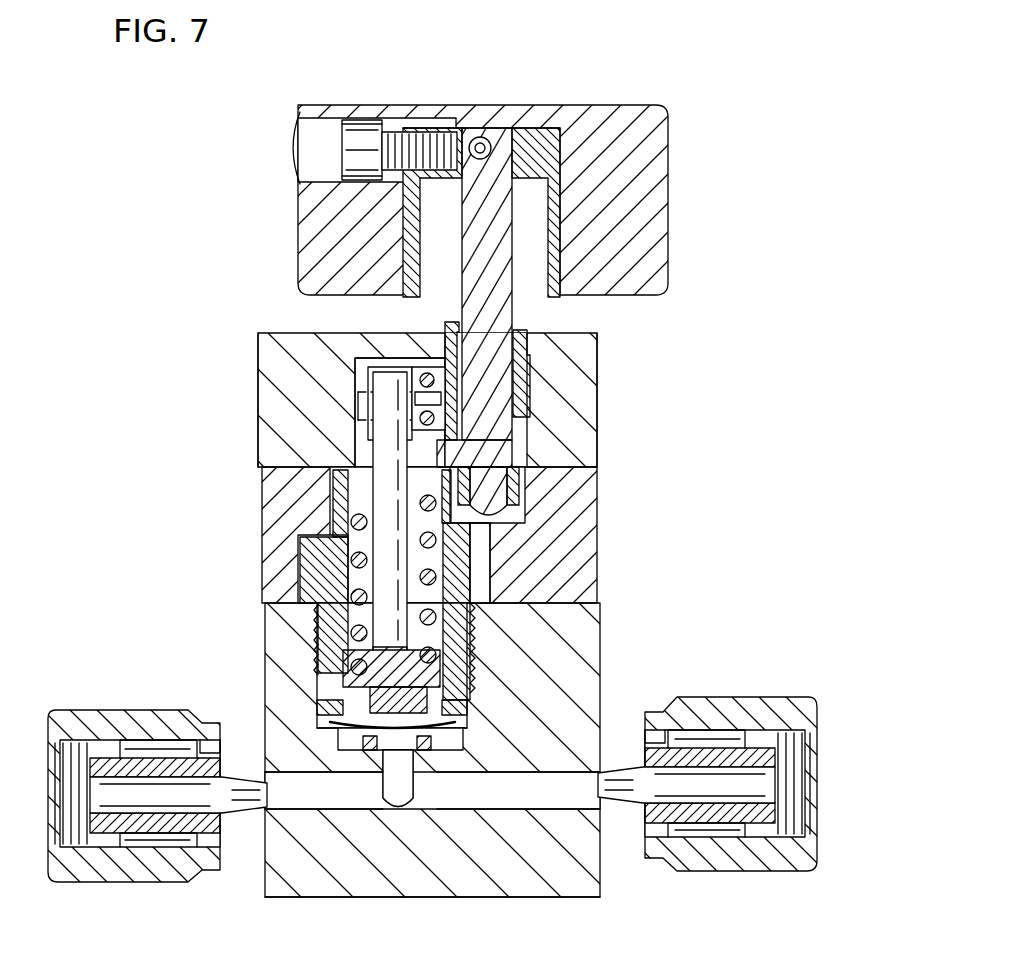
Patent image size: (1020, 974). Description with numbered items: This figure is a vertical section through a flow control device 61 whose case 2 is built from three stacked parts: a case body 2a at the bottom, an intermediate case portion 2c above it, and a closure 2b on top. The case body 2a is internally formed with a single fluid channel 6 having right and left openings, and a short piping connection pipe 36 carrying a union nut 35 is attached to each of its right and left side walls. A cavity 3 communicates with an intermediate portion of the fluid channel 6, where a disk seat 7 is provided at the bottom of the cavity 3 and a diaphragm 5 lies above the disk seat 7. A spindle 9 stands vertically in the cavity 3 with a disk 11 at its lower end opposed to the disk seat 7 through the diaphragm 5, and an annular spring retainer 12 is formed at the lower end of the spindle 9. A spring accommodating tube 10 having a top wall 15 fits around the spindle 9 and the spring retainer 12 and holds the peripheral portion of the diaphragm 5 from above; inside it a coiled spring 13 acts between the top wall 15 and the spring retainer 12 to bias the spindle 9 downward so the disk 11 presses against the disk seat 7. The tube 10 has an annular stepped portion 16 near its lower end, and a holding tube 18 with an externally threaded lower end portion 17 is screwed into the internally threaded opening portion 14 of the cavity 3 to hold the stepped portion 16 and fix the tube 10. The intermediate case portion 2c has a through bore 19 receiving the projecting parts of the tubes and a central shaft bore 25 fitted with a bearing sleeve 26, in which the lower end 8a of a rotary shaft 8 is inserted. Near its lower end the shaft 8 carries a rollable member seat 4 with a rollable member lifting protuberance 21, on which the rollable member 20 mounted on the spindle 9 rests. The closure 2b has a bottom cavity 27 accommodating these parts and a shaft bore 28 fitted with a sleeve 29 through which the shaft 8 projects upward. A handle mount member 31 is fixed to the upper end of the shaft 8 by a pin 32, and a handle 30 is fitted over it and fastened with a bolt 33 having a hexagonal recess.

The case 2 is at (256, 452).
The case body 2a is at (586, 692).
The closure 2b is at (573, 398).
The intermediate case portion 2c is at (590, 515).
The cavity 3 is at (452, 715).
The rollable member seat 4 is at (508, 450).
The diaphragm 5 is at (335, 722).
The fluid channel 6 is at (463, 850).
The disk seat 7 is at (470, 812).
The rotary shaft 8 is at (497, 310).
The lower end 8a is at (500, 487).
The spindle 9 is at (385, 375).
The spring accommodating tube 10 is at (355, 525).
The disk 11 is at (393, 770).
The annular spring retainer 12 is at (335, 702).
The coiled spring 13 is at (320, 560).
The internally threaded opening portion 14 is at (320, 630).
The top wall 15 is at (338, 497).
The annular stepped portion 16 is at (470, 690).
The externally threaded lower end portion 17 is at (472, 632).
The holding tube 18 is at (490, 550).
The through bore 19 is at (487, 575).
The rollable member 20 is at (422, 375).
The rollable member lifting protuberance 21 is at (410, 432).
The shaft bore 25 is at (465, 500).
The bearing sleeve 26 is at (520, 490).
The cavity 27 is at (355, 395).
The shaft bore 28 is at (452, 340).
The sleeve 29 is at (520, 375).
The handle 30 is at (605, 125).
The handle mount member 31 is at (522, 135).
The pin 32 is at (478, 136).
The bolt 33 is at (357, 128).
The union nut 35 is at (110, 712).
The piping connection pipe 36 is at (240, 838).
The flow control device 61 is at (622, 423).